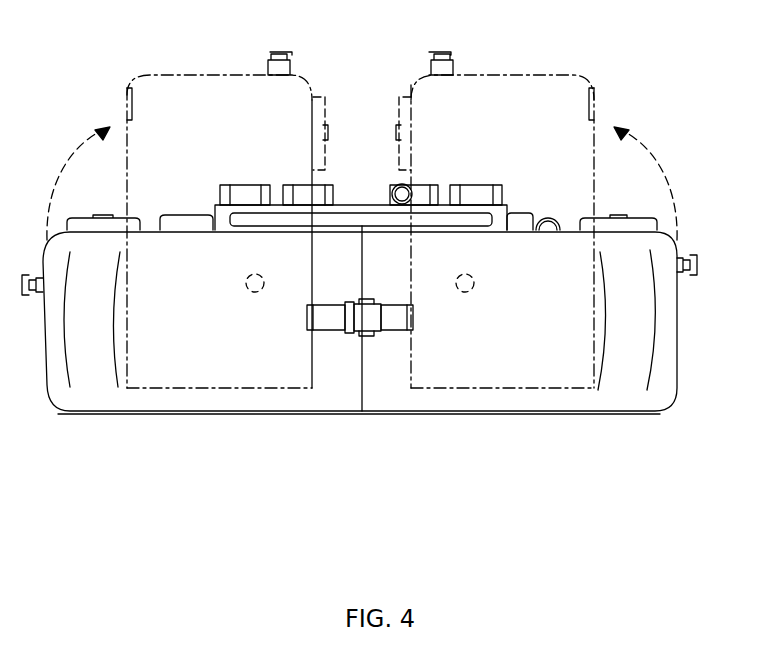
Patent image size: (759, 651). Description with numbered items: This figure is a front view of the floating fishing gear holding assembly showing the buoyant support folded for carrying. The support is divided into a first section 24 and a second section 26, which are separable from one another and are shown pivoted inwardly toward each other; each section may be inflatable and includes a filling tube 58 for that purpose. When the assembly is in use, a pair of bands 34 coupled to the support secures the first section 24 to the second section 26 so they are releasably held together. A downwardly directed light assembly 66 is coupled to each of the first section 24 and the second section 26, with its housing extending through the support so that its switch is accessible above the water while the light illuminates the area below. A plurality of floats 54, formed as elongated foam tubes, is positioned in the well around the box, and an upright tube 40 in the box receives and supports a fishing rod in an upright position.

The first section 24 is at (523, 87).
The second section 26 is at (210, 88).
The bands 34 is at (395, 323).
The upright tube 40 is at (320, 190).
The floats 54 is at (362, 226).
The filling tube 58 is at (680, 257).
The downwardly directed light assembly 66 is at (325, 80).